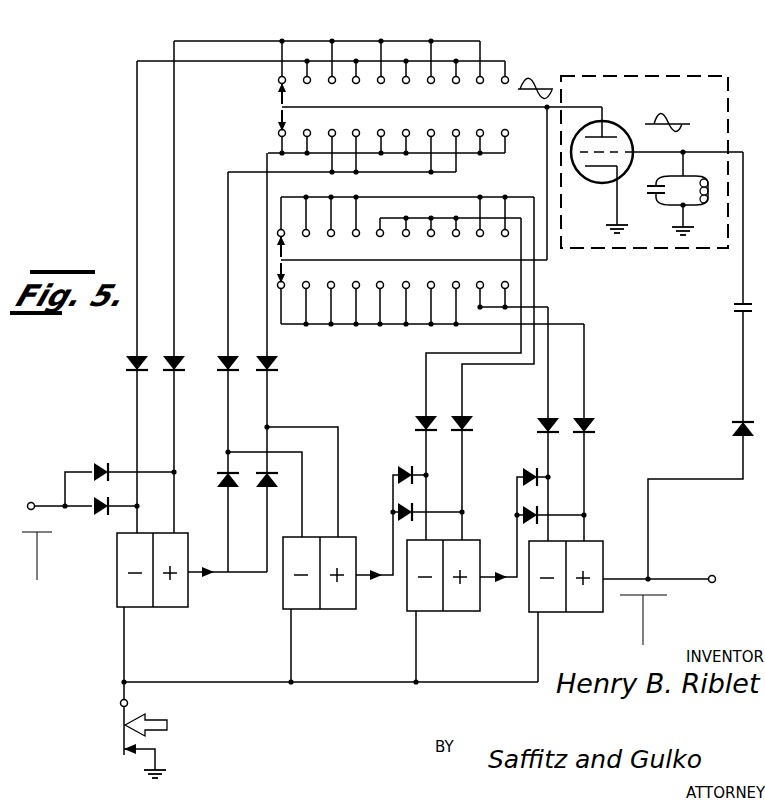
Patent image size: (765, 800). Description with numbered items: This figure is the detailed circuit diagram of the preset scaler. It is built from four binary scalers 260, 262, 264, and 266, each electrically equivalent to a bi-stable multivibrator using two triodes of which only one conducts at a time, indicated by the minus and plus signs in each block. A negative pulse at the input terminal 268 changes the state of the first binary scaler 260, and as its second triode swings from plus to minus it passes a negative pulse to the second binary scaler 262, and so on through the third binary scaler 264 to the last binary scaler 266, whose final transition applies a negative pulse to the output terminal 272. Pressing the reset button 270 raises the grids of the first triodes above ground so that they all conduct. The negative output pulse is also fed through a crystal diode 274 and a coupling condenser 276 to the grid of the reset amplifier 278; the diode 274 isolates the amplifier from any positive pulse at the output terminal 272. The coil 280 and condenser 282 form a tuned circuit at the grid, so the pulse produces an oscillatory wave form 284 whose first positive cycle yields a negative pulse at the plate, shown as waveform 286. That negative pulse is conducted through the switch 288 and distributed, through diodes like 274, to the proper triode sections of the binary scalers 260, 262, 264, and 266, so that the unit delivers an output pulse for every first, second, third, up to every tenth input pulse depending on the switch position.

The binary scaler 260 is at (199, 526).
The binary scaler 262 is at (366, 526).
The binary scaler 264 is at (490, 528).
The binary scaler 266 is at (612, 529).
The input terminal 268 is at (29, 503).
The reset button 270 is at (167, 725).
The output terminal 272 is at (712, 575).
The crystal diode 274 is at (738, 422).
The coupling condenser 276 is at (736, 306).
The reset amplifier 278 is at (700, 68).
The coil 280 is at (708, 192).
The condenser 282 is at (651, 195).
The oscillatory wave form 284 is at (670, 112).
The negative pulse waveform 286 is at (553, 68).
The switch 288 is at (392, 36).